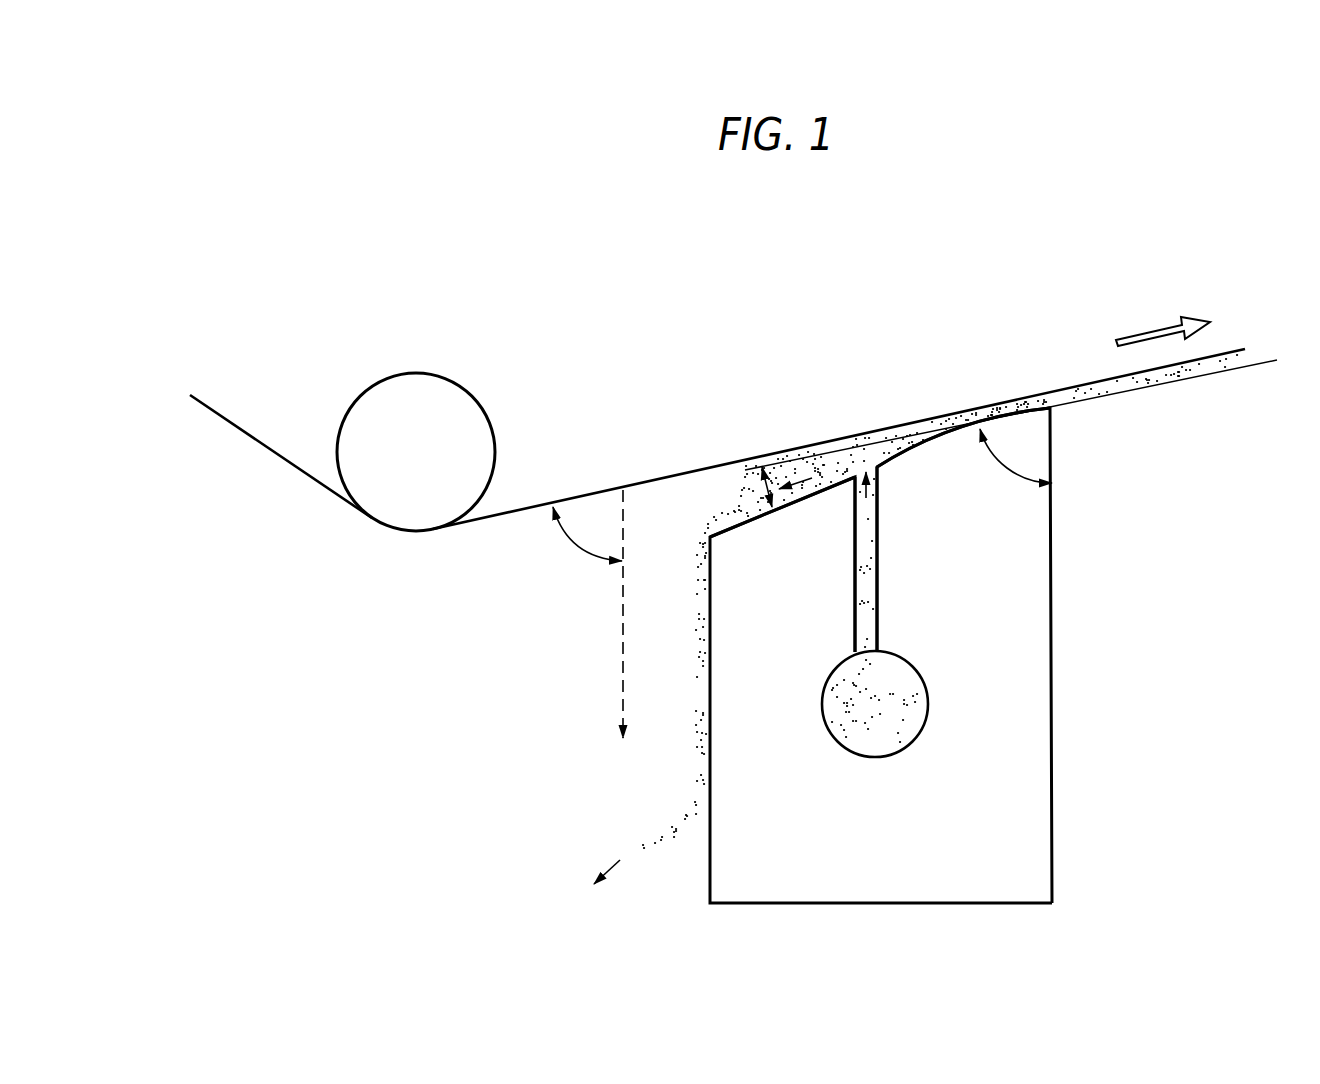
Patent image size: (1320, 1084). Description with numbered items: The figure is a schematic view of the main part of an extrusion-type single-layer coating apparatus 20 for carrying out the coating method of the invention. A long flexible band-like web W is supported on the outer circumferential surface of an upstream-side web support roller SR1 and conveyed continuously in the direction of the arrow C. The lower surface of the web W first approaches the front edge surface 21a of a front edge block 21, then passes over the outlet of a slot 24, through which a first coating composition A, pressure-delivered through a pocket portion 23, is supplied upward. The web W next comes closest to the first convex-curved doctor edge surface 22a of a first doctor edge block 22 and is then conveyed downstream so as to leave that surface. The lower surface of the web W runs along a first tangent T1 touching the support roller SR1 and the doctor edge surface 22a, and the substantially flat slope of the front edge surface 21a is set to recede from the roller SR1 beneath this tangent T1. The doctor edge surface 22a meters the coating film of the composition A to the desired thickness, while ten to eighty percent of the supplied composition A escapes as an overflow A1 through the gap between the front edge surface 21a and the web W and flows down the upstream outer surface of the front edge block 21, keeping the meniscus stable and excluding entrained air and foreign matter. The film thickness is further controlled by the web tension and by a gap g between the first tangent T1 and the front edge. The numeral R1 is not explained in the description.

The extrusion-type coating apparatus 20 is at (713, 318).
The front edge block 21 is at (740, 678).
The front edge surface 21a is at (770, 514).
The first doctor edge block 22 is at (1005, 589).
The first doctor edge surface 22a is at (937, 438).
The pocket portion 23 is at (893, 742).
The slot 24 is at (877, 587).
The first coating composition A is at (870, 685).
The overflow A1 is at (640, 842).
The web W is at (262, 446).
The upstream-side web support roller SR1 is at (466, 390).
The conveying direction C is at (1158, 328).
The first tangent T1 is at (1182, 382).
The gap g is at (622, 690).
The radius of curvature of second block lip R1 is at (930, 449).